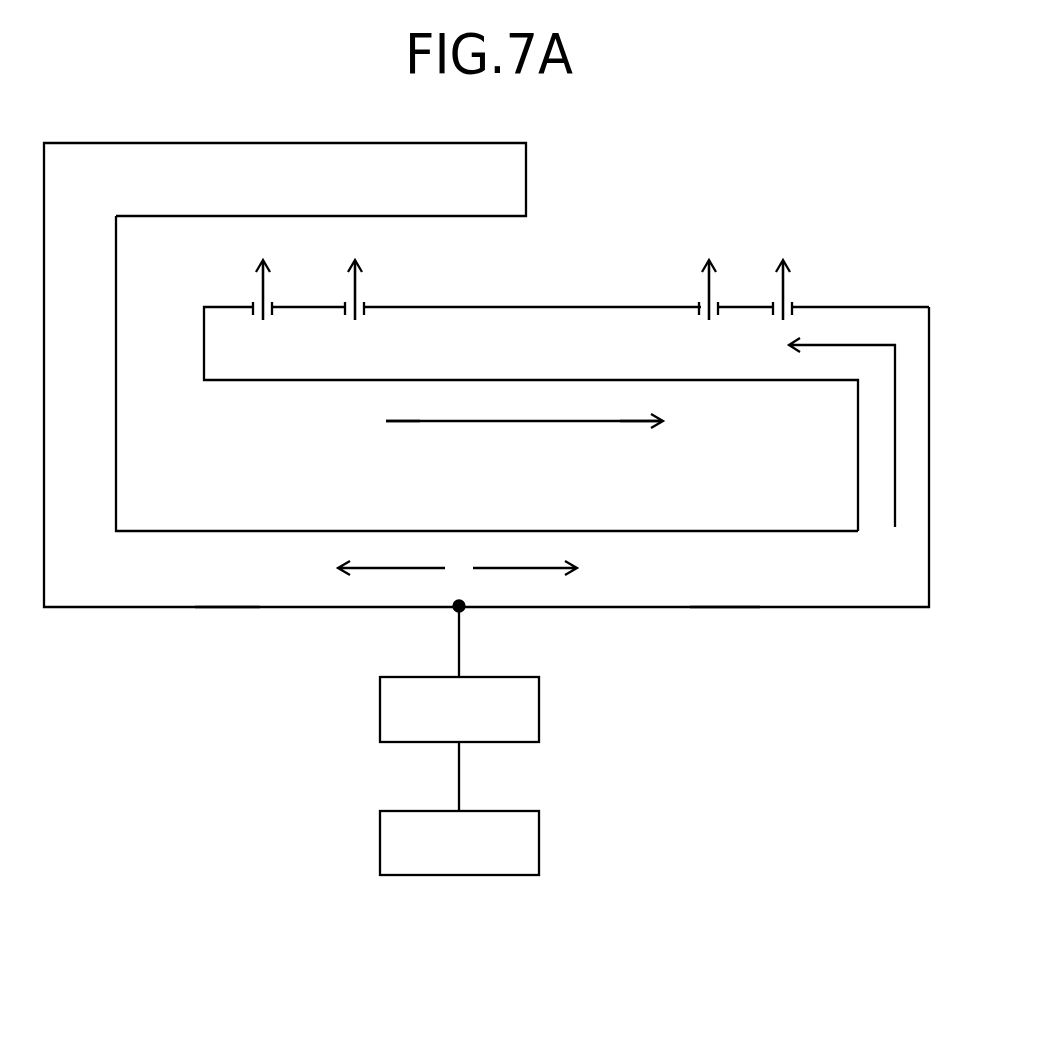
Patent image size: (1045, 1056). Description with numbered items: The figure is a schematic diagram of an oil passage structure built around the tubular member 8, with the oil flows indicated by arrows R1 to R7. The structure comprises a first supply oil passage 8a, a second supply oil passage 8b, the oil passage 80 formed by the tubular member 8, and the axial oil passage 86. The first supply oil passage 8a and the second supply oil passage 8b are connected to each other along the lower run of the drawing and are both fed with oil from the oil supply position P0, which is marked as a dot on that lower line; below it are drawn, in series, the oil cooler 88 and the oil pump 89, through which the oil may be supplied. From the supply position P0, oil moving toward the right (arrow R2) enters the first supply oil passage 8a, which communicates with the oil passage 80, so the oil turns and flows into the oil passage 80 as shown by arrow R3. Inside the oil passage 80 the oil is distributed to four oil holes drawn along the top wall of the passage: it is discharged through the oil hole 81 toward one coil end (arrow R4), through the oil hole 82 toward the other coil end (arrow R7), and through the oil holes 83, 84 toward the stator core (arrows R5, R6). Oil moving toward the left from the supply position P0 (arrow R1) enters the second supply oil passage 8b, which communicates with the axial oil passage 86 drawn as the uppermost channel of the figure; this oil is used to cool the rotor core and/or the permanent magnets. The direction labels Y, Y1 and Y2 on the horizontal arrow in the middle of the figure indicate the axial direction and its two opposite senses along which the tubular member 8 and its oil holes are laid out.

The tubular member 8 is at (552, 307).
The axial oil passage 86 is at (447, 191).
The oil passage 80 is at (570, 361).
The oil hole 82 is at (252, 294).
The oil hole 84 is at (362, 297).
The oil hole 83 is at (704, 295).
The oil hole 81 is at (778, 297).
The oil cooler 88 is at (541, 701).
The oil pump 89 is at (541, 835).
The first supply oil passage 8a is at (727, 581).
The second supply oil passage 8b is at (222, 583).
The oil supply position P0 is at (452, 611).
The arrow R1 is at (391, 580).
The arrow R2 is at (525, 580).
The arrow R3 is at (842, 432).
The arrow R4 is at (788, 292).
The arrow R5 is at (712, 290).
The arrow R6 is at (360, 288).
The arrow R7 is at (258, 287).
The conveyance direction Y is at (524, 439).
The downstream direction Y1 is at (648, 442).
The upstream direction Y2 is at (395, 442).